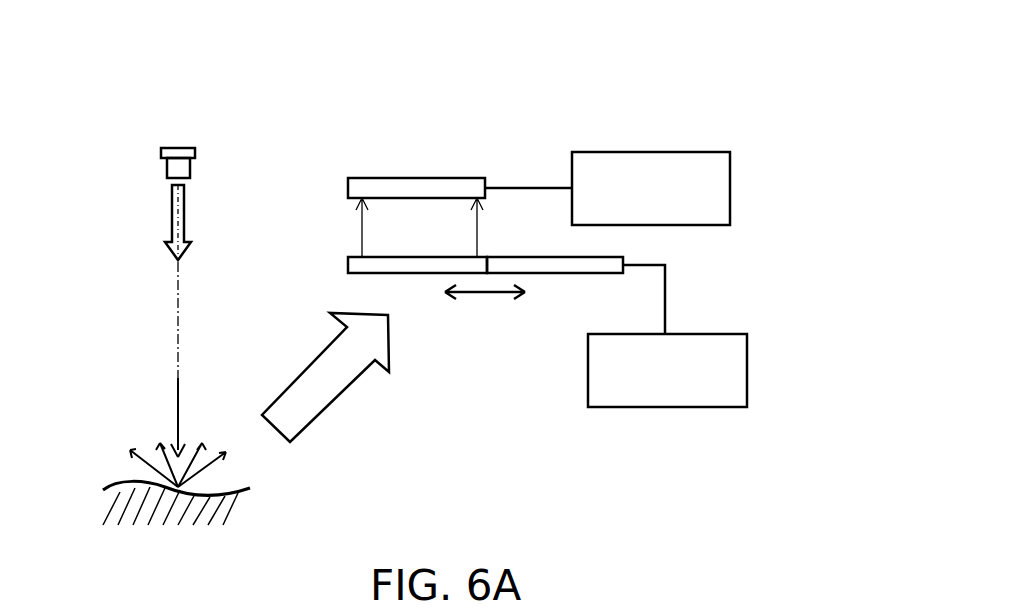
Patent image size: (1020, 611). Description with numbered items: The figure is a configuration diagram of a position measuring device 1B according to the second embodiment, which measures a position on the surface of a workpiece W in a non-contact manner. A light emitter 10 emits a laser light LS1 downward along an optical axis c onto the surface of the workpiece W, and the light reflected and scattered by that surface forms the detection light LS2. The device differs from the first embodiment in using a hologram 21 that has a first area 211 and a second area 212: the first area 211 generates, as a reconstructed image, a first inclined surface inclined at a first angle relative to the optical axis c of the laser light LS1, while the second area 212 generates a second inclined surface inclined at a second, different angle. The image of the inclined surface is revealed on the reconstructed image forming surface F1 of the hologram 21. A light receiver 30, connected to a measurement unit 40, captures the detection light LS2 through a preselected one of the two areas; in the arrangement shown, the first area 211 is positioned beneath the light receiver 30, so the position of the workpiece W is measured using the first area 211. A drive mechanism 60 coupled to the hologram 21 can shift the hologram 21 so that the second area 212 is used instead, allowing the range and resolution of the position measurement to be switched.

The position measuring device 1B is at (623, 97).
The light emitter 10 is at (178, 148).
The laser light LS1 is at (176, 220).
The optical axis c is at (176, 315).
The workpiece W is at (117, 480).
The reconstructed image forming surface F1 is at (348, 198).
The light receiver 30 is at (460, 178).
The measurement unit 40 is at (716, 152).
The hologram 21 is at (540, 289).
The first area 211 is at (407, 268).
The second area 212 is at (557, 268).
The drive mechanism 60 is at (747, 370).
The detection light LS2 is at (327, 395).